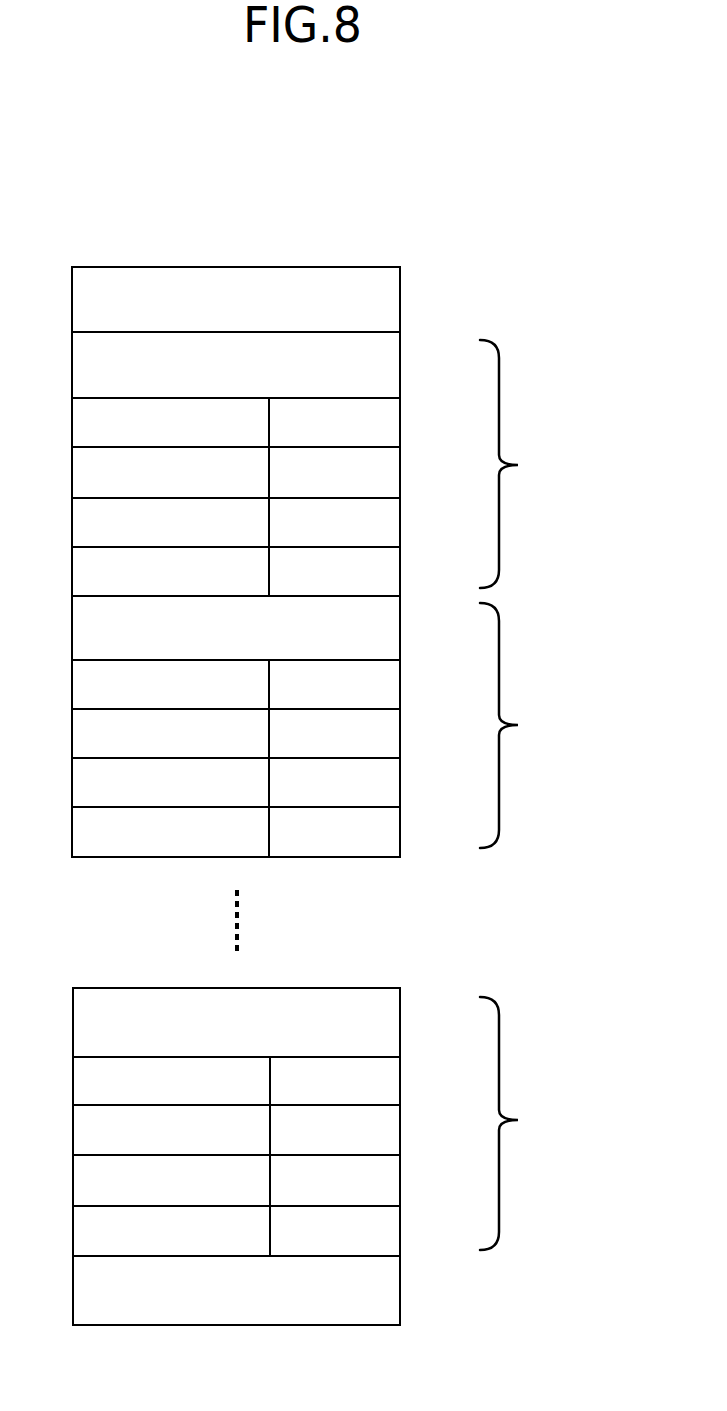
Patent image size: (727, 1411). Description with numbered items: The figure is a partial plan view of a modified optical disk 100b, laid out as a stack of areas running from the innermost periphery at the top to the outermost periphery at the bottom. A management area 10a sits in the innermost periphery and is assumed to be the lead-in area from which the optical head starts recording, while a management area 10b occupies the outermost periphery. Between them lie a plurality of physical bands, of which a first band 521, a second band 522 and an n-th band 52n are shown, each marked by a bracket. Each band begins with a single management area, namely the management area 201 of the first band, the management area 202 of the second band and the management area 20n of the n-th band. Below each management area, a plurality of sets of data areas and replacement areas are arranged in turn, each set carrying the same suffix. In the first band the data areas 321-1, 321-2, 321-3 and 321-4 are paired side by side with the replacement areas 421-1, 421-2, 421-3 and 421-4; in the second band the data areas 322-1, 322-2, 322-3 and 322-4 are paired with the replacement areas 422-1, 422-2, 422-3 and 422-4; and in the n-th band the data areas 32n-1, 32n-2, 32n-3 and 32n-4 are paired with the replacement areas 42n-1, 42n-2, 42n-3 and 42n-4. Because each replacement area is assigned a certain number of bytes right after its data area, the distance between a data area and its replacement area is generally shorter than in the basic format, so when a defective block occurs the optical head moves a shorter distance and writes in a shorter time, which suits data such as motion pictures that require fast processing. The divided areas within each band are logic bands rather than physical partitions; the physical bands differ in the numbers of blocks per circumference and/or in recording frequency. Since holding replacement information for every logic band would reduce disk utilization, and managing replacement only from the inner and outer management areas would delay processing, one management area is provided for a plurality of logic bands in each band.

The optical disk 100b is at (272, 248).
The management area 10a is at (236, 299).
The management area 10b is at (236, 1290).
The management area 201 is at (236, 365).
The management area 202 is at (236, 628).
The management area 20n is at (236, 1022).
The data area 321-1 is at (170, 422).
The data area 321-2 is at (170, 472).
The data area 321-3 is at (170, 522).
The data area 321-4 is at (170, 571).
The replacement area 421-1 is at (334, 422).
The replacement area 421-2 is at (334, 472).
The replacement area 421-3 is at (334, 522).
The replacement area 421-4 is at (334, 571).
The data area 322-1 is at (170, 684).
The data area 322-2 is at (170, 733).
The data area 322-3 is at (170, 782).
The data area 322-4 is at (170, 832).
The replacement area 422-1 is at (334, 684).
The replacement area 422-2 is at (334, 733).
The replacement area 422-3 is at (334, 782).
The replacement area 422-4 is at (334, 832).
The data area 32n-1 is at (171, 1081).
The data area 32n-2 is at (171, 1130).
The data area 32n-3 is at (171, 1180).
The data area 32n-4 is at (171, 1231).
The replacement area 42n-1 is at (335, 1081).
The replacement area 42n-2 is at (335, 1130).
The replacement area 42n-3 is at (335, 1180).
The replacement area 42n-4 is at (335, 1231).
The band 521 is at (530, 464).
The band 522 is at (530, 725).
The band 52n is at (530, 1123).